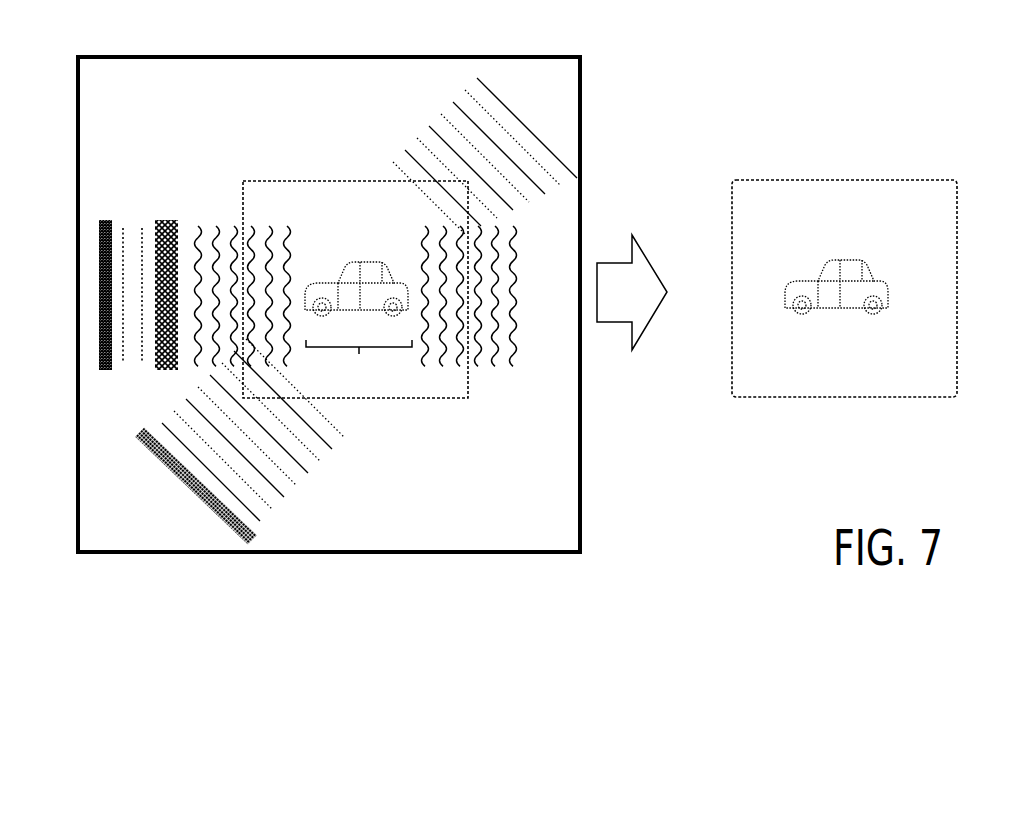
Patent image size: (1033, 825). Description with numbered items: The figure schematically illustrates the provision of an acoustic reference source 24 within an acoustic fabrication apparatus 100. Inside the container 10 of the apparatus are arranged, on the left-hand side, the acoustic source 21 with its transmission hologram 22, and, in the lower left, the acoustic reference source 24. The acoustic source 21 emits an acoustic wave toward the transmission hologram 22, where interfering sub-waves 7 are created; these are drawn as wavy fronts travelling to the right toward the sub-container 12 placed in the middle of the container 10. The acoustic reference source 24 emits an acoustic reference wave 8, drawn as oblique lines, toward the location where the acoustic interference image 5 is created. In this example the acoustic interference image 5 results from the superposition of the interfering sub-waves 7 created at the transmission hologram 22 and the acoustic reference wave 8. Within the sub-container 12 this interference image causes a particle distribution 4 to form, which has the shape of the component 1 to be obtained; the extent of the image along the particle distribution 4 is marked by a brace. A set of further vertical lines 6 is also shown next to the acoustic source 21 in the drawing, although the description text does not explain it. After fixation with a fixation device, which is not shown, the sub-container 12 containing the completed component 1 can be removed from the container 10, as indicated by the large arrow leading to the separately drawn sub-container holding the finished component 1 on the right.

The acoustic fabrication apparatus 100 is at (692, 103).
The container 10 is at (567, 547).
The sub-container 12 is at (445, 399).
The particle distribution 4 is at (349, 290).
The acoustic interference image 5 is at (359, 368).
The interfering sub-waves 7 is at (223, 235).
The streak artifact 6 is at (142, 268).
The acoustic source 21 is at (102, 221).
The transmission hologram 22 is at (168, 220).
The acoustic reference source 24 is at (180, 477).
The acoustic reference wave 8 is at (272, 453).
The component 1 is at (840, 297).